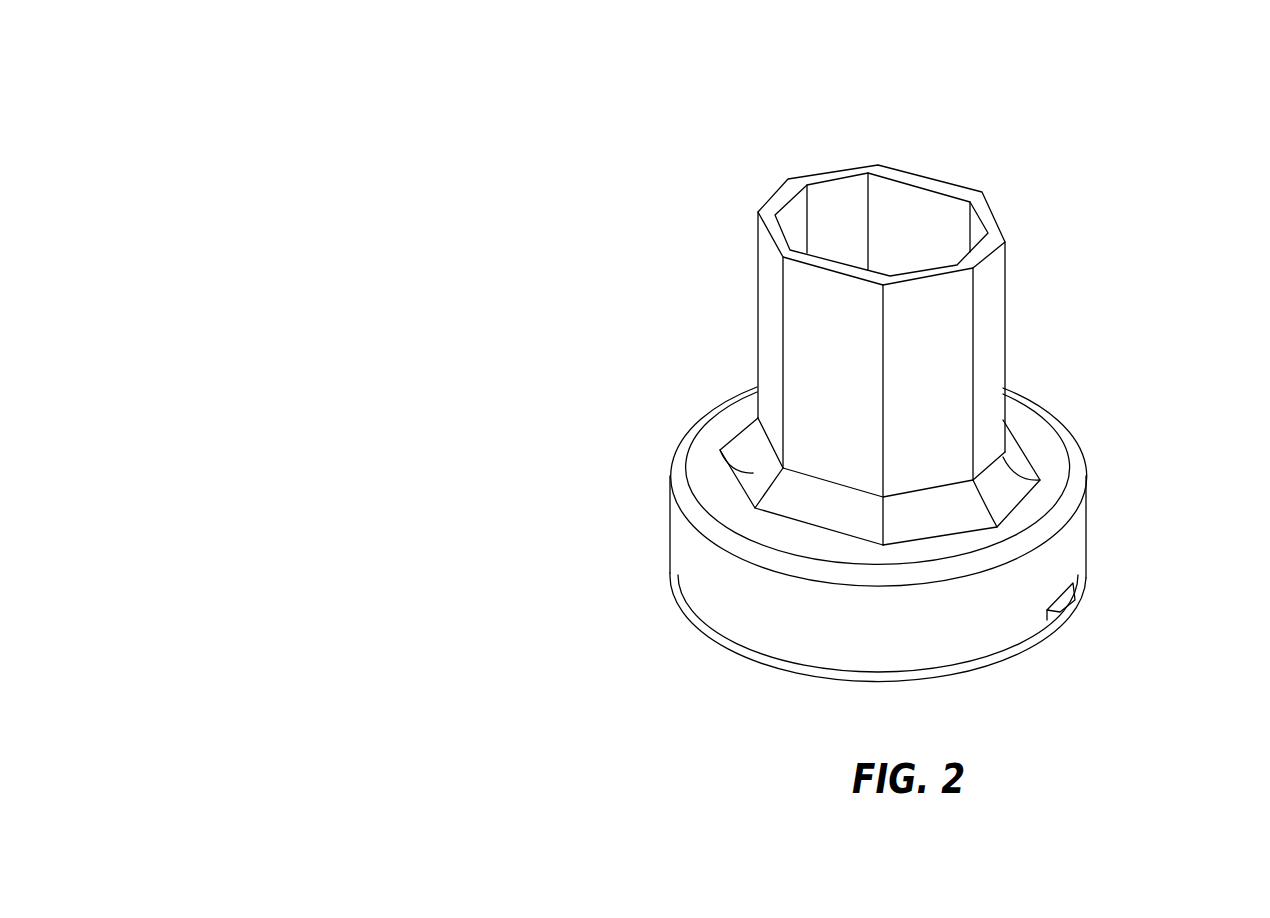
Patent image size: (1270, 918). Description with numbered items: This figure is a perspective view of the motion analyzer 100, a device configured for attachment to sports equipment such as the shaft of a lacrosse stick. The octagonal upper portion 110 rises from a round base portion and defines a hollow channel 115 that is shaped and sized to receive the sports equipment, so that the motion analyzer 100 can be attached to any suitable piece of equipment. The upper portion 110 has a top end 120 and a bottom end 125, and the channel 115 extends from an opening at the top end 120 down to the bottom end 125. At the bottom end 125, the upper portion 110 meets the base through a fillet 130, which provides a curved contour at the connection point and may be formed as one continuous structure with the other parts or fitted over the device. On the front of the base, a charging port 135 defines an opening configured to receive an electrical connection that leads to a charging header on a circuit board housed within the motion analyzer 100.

The motion analyzer 100 is at (427, 192).
The upper portion 110 is at (1005, 330).
The hollow channel 115 is at (900, 243).
The top end 120 is at (758, 206).
The bottom end 125 is at (1003, 440).
The fillet 130 is at (728, 466).
The charging port 135 is at (1073, 608).